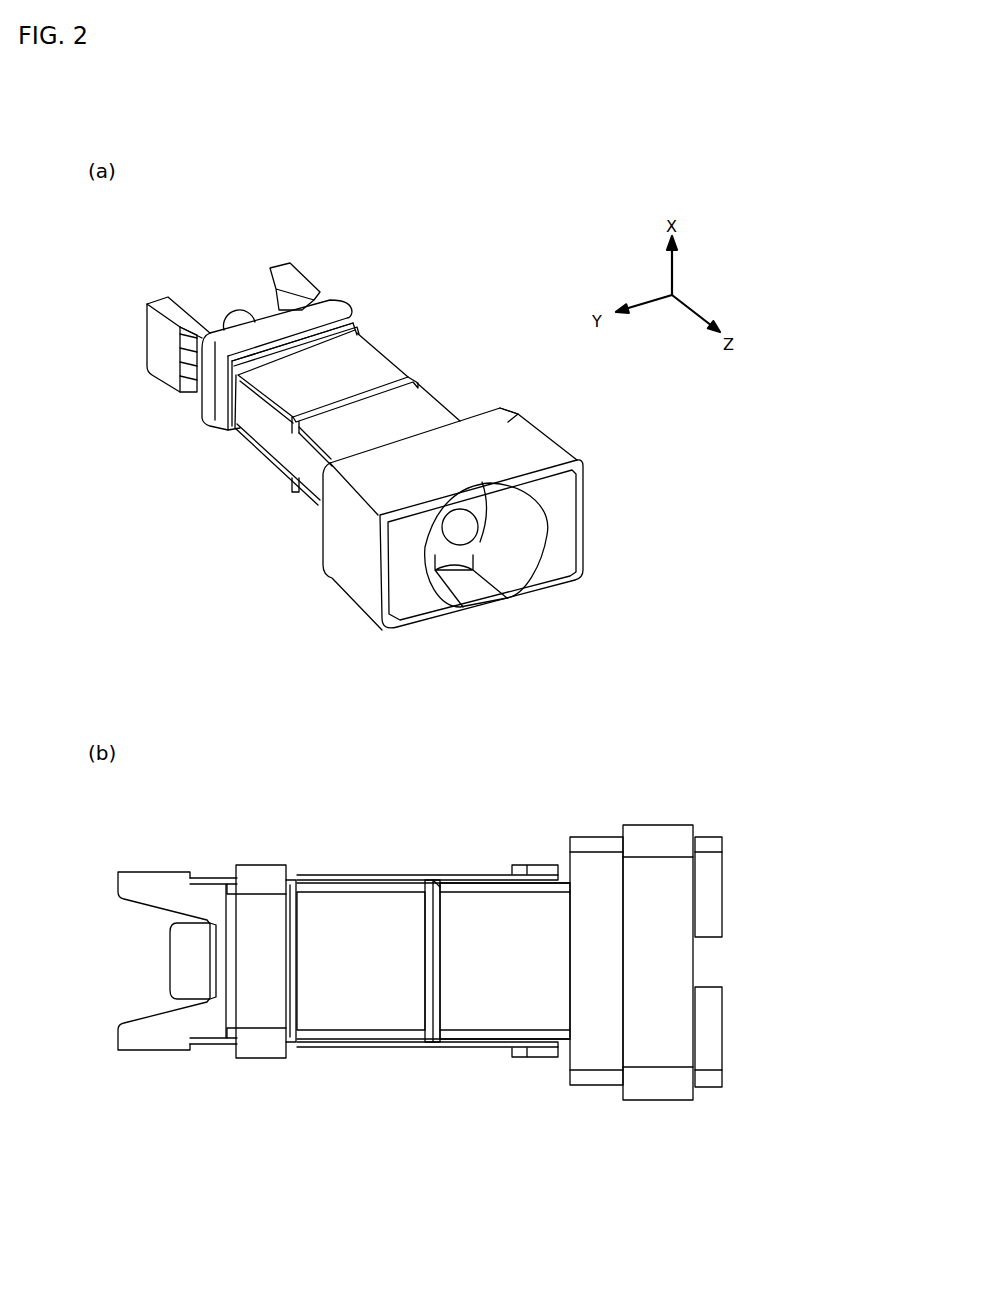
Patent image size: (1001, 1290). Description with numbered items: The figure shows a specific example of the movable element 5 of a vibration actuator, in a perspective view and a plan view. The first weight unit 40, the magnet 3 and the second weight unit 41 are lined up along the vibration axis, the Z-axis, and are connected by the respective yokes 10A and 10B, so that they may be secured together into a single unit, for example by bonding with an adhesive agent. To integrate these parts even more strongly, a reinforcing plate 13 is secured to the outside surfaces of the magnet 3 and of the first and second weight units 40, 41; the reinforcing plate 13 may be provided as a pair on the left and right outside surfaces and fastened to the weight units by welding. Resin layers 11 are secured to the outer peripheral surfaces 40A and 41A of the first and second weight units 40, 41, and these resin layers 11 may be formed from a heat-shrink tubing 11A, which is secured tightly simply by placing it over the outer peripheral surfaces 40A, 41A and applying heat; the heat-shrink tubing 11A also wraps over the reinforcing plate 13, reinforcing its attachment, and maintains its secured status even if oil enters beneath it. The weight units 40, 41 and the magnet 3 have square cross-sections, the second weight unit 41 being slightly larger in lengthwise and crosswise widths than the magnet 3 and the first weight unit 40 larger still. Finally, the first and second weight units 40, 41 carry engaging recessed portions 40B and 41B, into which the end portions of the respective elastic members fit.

The magnet 3 is at (378, 346).
The movable element 5 is at (470, 302).
The yoke 10A is at (410, 372).
The yoke 10B is at (366, 300).
The resin layer 11 is at (250, 332).
The heat-shrink tubing 11A is at (441, 679).
The reinforcing plate 13 is at (260, 441).
The first weight unit 40 is at (425, 407).
The outer peripheral surface 40A is at (508, 408).
The engaging recessed portion 40B is at (515, 578).
The second weight unit 41 is at (283, 266).
The outer peripheral surface 41A is at (180, 343).
The engaging recessed portion 41B is at (193, 307).